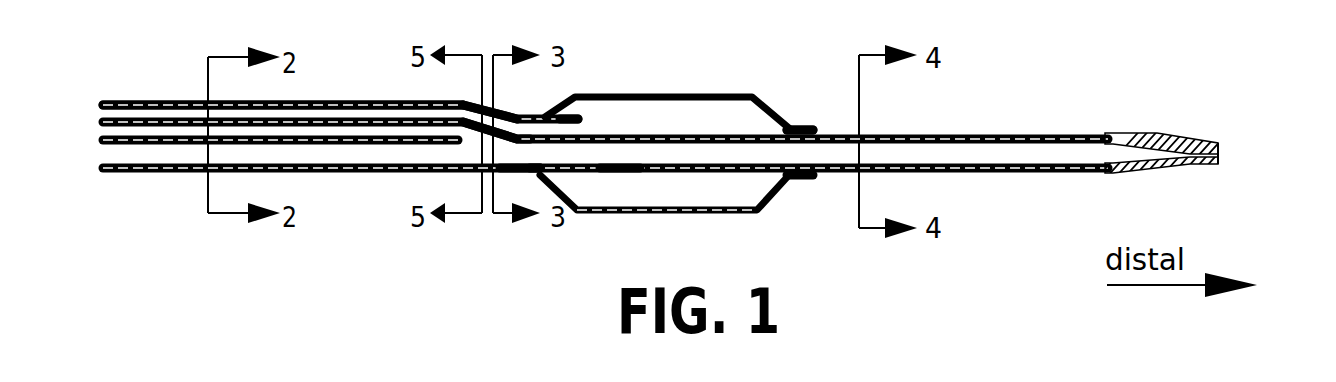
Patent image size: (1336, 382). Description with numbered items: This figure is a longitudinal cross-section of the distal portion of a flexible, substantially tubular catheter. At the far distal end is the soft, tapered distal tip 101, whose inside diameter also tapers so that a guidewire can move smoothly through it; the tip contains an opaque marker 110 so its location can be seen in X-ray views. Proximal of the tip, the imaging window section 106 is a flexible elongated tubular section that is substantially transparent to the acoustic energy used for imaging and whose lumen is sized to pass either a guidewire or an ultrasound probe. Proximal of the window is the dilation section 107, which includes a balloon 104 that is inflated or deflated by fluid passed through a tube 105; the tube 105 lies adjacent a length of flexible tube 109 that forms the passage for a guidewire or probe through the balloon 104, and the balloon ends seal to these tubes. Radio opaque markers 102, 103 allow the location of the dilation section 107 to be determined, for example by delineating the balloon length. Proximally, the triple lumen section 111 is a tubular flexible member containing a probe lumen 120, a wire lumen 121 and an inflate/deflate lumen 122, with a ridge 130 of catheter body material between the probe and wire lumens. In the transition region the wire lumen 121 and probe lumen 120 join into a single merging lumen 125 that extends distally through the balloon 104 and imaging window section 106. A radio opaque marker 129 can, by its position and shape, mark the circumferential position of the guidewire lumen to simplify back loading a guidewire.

The distal tip 101 is at (1223, 163).
The radio opaque marker 102 is at (760, 131).
The radio opaque marker 103 is at (585, 130).
The balloon 104 is at (676, 218).
The tube 105 is at (506, 100).
The imaging window section 106 is at (997, 133).
The dilation section 107 is at (679, 80).
The flexible tube 109 is at (618, 174).
The opaque marker 110 is at (1193, 140).
The triple lumen section 111 is at (303, 100).
The probe lumen 120 is at (125, 158).
The wire lumen 121 is at (123, 133).
The inflate/deflate lumen 122 is at (123, 115).
The merging lumen 125 is at (465, 151).
The radio opaque marker 129 is at (512, 172).
The ridge 130 is at (387, 146).